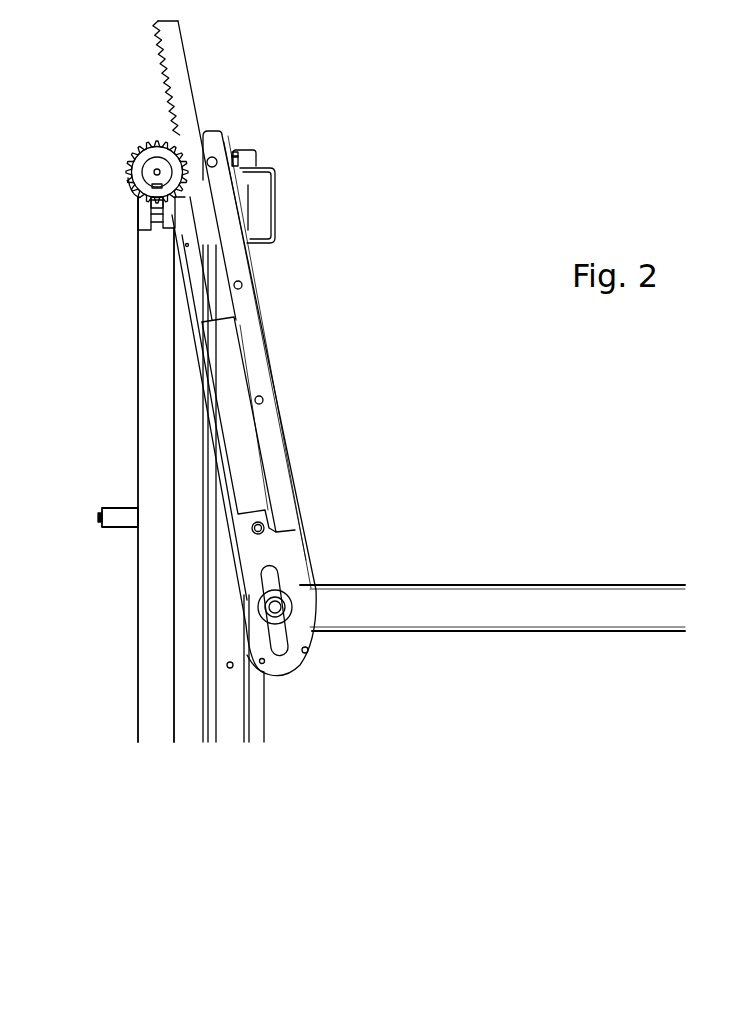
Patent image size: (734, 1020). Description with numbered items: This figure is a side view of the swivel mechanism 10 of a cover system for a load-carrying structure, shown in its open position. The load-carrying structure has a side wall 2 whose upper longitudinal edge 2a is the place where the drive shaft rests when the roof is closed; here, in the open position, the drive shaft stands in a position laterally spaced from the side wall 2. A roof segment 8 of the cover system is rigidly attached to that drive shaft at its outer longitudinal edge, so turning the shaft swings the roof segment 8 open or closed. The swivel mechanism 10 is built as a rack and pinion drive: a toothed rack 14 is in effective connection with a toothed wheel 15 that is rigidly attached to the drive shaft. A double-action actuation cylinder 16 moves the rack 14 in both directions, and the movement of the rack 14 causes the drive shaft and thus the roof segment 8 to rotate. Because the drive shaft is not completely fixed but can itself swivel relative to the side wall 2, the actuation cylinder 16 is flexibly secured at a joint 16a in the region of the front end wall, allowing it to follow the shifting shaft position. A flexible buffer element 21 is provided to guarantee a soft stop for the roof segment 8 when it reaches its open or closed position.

The swivel mechanism 10 is at (324, 97).
The side wall 2 is at (223, 715).
The upper longitudinal edge 2a is at (262, 168).
The roof segment 8 is at (155, 583).
The toothed rack 14 is at (176, 67).
The toothed wheel 15 is at (142, 156).
The actuation cylinder 16 is at (232, 398).
The joint 16a is at (281, 603).
The flexible buffer element 21 is at (238, 152).